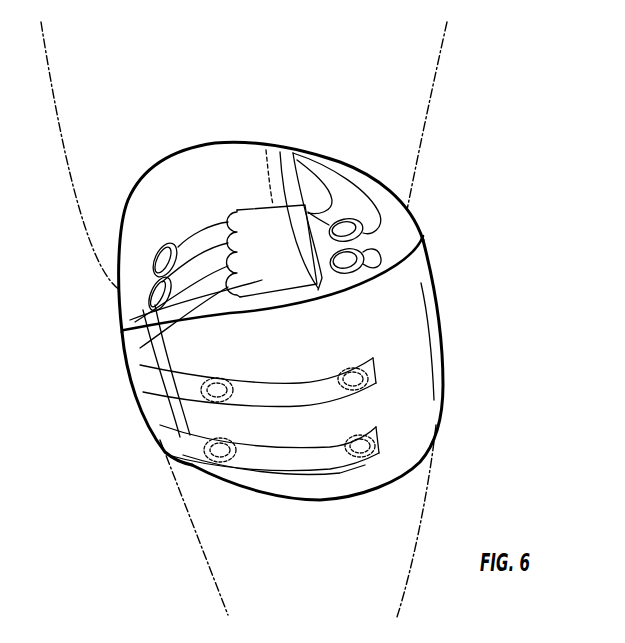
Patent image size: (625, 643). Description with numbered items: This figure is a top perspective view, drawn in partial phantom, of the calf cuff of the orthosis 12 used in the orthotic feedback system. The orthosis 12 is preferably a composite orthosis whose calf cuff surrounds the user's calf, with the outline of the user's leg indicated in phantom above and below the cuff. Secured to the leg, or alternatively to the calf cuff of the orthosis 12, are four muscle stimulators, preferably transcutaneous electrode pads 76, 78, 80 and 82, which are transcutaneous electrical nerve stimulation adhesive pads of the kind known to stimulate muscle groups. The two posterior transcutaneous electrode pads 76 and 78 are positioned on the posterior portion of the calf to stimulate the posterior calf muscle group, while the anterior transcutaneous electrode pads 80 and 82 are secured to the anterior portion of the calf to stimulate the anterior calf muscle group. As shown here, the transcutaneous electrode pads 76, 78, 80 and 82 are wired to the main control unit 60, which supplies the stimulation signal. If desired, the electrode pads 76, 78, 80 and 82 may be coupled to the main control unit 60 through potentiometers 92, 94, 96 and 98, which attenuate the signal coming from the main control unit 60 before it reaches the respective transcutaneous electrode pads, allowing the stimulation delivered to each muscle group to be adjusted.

The orthosis 12 is at (428, 258).
The main control unit 60 is at (312, 212).
The transcutaneous electrode pad 76 is at (358, 222).
The transcutaneous electrode pad 78 is at (386, 328).
The transcutaneous electrode pad 80 is at (184, 226).
The transcutaneous electrode pad 82 is at (207, 370).
The potentiometer 92 is at (152, 268).
The potentiometer 94 is at (153, 298).
The potentiometer 96 is at (162, 318).
The potentiometer 98 is at (167, 350).